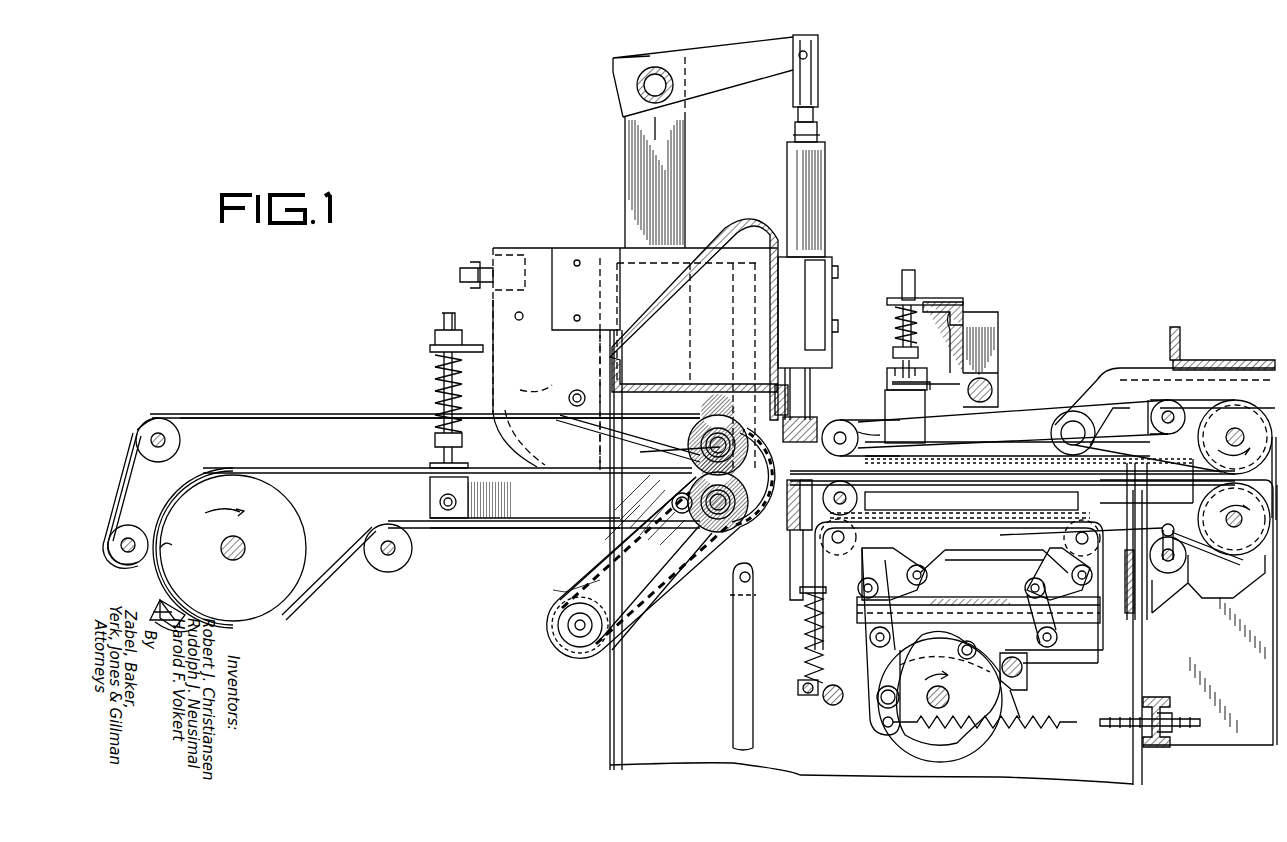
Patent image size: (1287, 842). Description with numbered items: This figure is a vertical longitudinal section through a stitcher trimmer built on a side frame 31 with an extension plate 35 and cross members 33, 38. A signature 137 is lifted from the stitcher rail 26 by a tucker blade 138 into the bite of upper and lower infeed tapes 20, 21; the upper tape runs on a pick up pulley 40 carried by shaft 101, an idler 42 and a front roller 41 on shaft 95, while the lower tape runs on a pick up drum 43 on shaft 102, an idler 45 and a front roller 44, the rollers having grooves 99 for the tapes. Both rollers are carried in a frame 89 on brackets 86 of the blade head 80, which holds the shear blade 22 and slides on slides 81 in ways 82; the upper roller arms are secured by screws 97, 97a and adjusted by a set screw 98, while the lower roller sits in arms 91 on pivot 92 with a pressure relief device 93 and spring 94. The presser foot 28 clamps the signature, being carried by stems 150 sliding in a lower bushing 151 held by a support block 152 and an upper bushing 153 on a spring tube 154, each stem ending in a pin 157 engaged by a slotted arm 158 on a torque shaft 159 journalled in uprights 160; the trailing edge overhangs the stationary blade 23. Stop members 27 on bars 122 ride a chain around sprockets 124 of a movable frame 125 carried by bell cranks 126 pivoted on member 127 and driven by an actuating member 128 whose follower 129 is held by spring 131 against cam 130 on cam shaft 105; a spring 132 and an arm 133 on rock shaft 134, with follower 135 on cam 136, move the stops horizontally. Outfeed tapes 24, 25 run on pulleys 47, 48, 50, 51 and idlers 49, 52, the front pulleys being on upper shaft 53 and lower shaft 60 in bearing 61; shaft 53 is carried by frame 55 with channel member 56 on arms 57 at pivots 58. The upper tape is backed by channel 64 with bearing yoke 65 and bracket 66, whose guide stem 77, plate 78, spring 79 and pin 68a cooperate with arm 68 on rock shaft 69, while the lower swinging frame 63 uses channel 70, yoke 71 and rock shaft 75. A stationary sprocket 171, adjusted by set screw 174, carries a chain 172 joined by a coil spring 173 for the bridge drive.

The upper infeed tape 20 is at (300, 414).
The lower infeed tape 21 is at (327, 572).
The shear blade 22 is at (790, 398).
The stationary blade 23 is at (790, 530).
The upper outfeed tape 24 is at (1040, 428).
The lower outfeed tape 25 is at (1005, 512).
The stitcher rail 26 is at (185, 612).
The stop members 27 is at (1030, 470).
The presser foot 28 is at (807, 420).
The side frame 31 is at (610, 712).
The cross member 33 is at (1157, 698).
The extension plate 35 is at (1228, 738).
The cross member 38 is at (963, 310).
The pick up pulley 40 is at (115, 525).
The roller 41 is at (706, 428).
The idler 42 is at (182, 441).
The pick up drum 43 is at (283, 520).
The front roller 44 is at (705, 555).
The idler 45 is at (388, 560).
The pulley 47 is at (868, 434).
The pulley 48 is at (1235, 437).
The idler 49 is at (1178, 408).
The pulley 50 is at (858, 501).
The pulley 51 is at (1238, 524).
The idler 52 is at (1165, 564).
The upper shaft 53 is at (1240, 425).
The adjustable frame 55 is at (1140, 350).
The transverse channel member 56 is at (1225, 362).
The arm 57 is at (1108, 378).
The pivot 58 is at (1078, 422).
The lower shaft 60 is at (1228, 523).
The bearing 61 is at (1262, 575).
The lower swinging frame 63 is at (846, 432).
The channel member 64 is at (950, 455).
The bearing yoke 65 is at (1150, 443).
The bracket 66 is at (915, 410).
The arm 68 is at (950, 390).
The hardened pin 68a is at (890, 372).
The rock shaft 69 is at (992, 390).
The channel member 70 is at (1158, 500).
The bearing yoke 71 is at (1121, 536).
The rock shaft 75 is at (830, 703).
The guide stem 77 is at (912, 275).
The plate 78 is at (917, 298).
The spring 79 is at (895, 328).
The blade head 80 is at (748, 225).
The slide 81 is at (733, 585).
The way 82 is at (710, 335).
The bracket 86 is at (577, 248).
The frame 89 is at (482, 300).
The arm 91 is at (506, 518).
The pivot 92 is at (677, 519).
The pressure relief device 93 is at (425, 390).
The spring 94 is at (435, 413).
The shaft 95 is at (704, 440).
The screw 97 is at (569, 398).
The clamping screw 97a is at (518, 320).
The set screw 98 is at (465, 268).
The groove 99 is at (650, 548).
The shaft 101 is at (140, 546).
The shaft 102 is at (243, 552).
The cam shaft 105 is at (948, 698).
The bar 122 is at (960, 505).
The sprocket 124 is at (846, 536).
The movable frame 125 is at (959, 592).
The bell crank 126 is at (1050, 568).
The longitudinally extending member 127 is at (975, 590).
The actuating member 128 is at (880, 662).
The follower 129 is at (880, 700).
The cam 130 is at (968, 745).
The spring 131 is at (1020, 724).
The spring 132 is at (805, 660).
The arm 133 is at (1072, 660).
The rock shaft 134 is at (1018, 668).
The follower 135 is at (975, 646).
The cam 136 is at (900, 730).
The signature 137 is at (180, 600).
The tucker blade 138 is at (150, 606).
The stem 150 is at (813, 115).
The lower bushing 151 is at (812, 360).
The support block 152 is at (830, 292).
The upper bushing 153 is at (818, 137).
The spring tube 154 is at (826, 182).
The yoke held pin 157 is at (812, 56).
The slotted arm 158 is at (735, 55).
The torque shaft 159 is at (660, 67).
The upright 160 is at (625, 150).
The stationary sprocket 171 is at (565, 648).
The chain 172 is at (570, 582).
The coil spring 173 is at (605, 565).
The set screw 174 is at (556, 620).